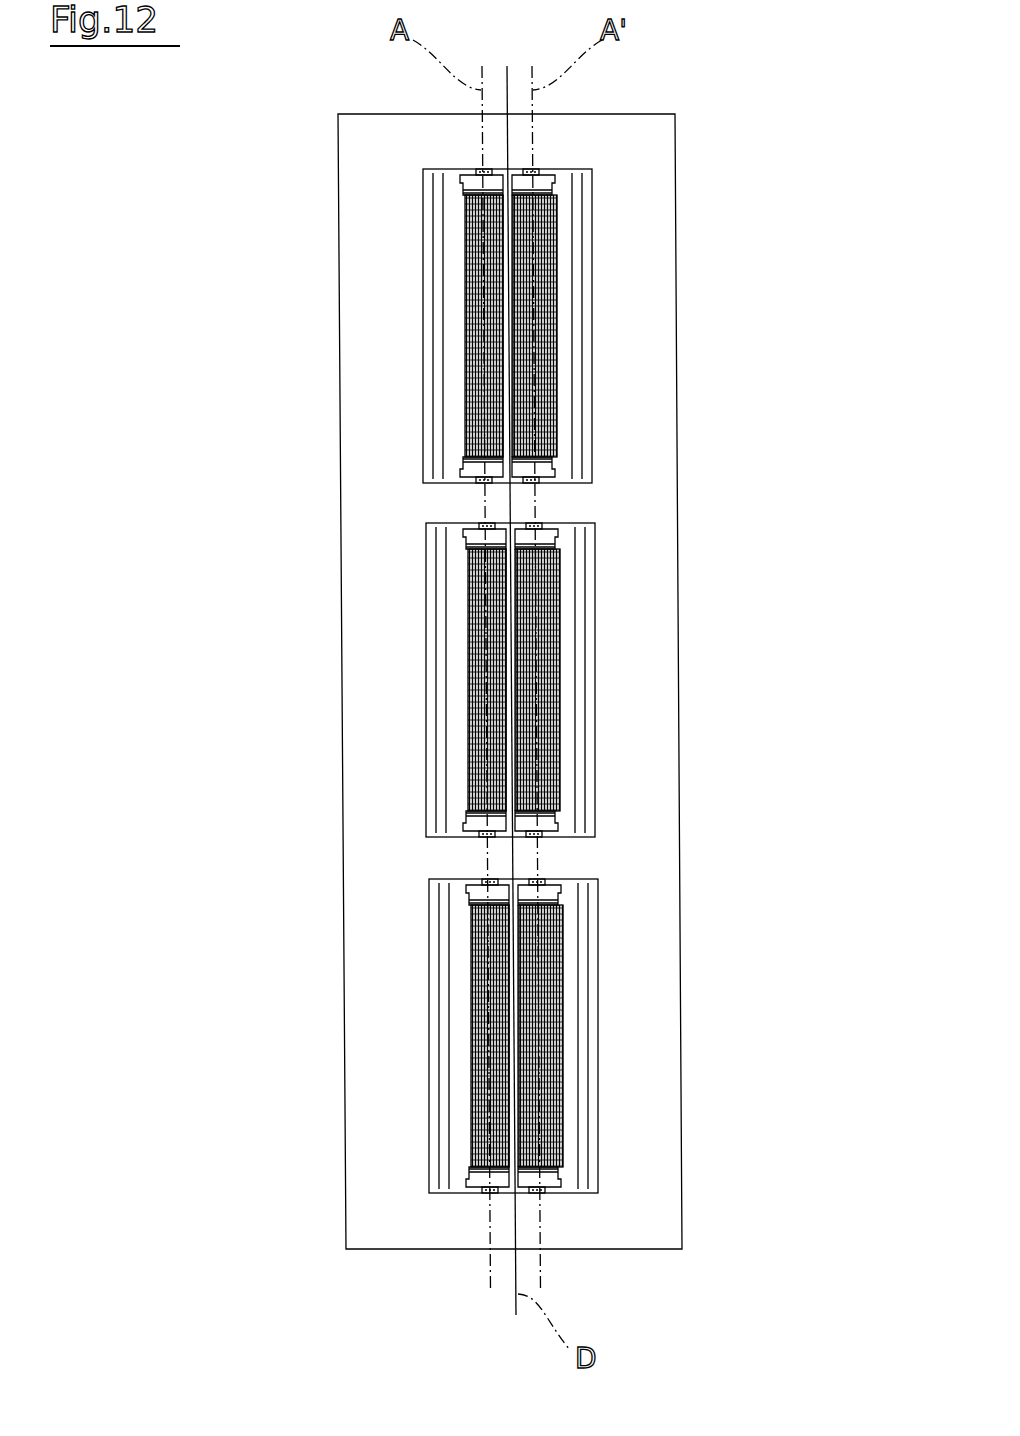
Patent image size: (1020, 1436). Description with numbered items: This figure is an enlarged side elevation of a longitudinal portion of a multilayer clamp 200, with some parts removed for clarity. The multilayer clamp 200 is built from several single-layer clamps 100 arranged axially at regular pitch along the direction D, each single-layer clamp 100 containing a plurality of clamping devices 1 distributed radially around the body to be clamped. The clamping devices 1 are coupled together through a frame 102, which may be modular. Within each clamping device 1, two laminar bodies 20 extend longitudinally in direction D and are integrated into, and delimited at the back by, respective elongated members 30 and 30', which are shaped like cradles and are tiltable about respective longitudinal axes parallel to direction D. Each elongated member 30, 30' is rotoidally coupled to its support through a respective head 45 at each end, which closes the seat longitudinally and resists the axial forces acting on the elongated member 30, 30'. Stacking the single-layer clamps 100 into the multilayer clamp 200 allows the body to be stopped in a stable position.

The clamping device 1 is at (622, 416).
The laminar body 20 is at (465, 367).
The elongated member 30 is at (379, 676).
The elongated member 30' is at (647, 663).
The head 45 is at (453, 174).
The single-layer clamp 100 is at (631, 244).
The frame 102 is at (643, 287).
The multilayer clamp 200 is at (710, 456).